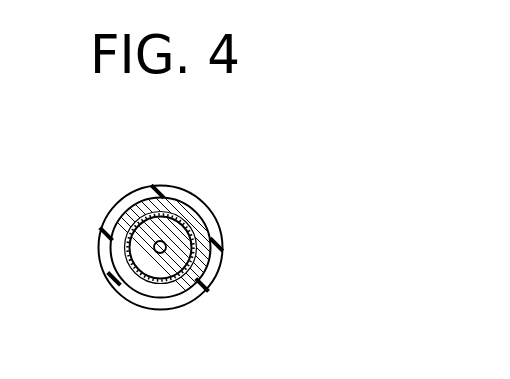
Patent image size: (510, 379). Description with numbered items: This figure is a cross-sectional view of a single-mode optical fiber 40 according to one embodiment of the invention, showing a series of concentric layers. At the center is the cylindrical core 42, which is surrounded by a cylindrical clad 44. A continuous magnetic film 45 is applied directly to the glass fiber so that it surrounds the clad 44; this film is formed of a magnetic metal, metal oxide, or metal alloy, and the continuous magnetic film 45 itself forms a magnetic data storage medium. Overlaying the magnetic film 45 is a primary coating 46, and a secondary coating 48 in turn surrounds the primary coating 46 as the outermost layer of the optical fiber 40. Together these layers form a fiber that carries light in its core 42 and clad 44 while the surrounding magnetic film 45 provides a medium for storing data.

The single-mode optical fiber 40 is at (262, 172).
The cylindrical core 42 is at (157, 243).
The cylindrical clad 44 is at (216, 242).
The continuous magnetic film 45 is at (168, 205).
The primary coating 46 is at (123, 212).
The secondary coating 48 is at (210, 277).